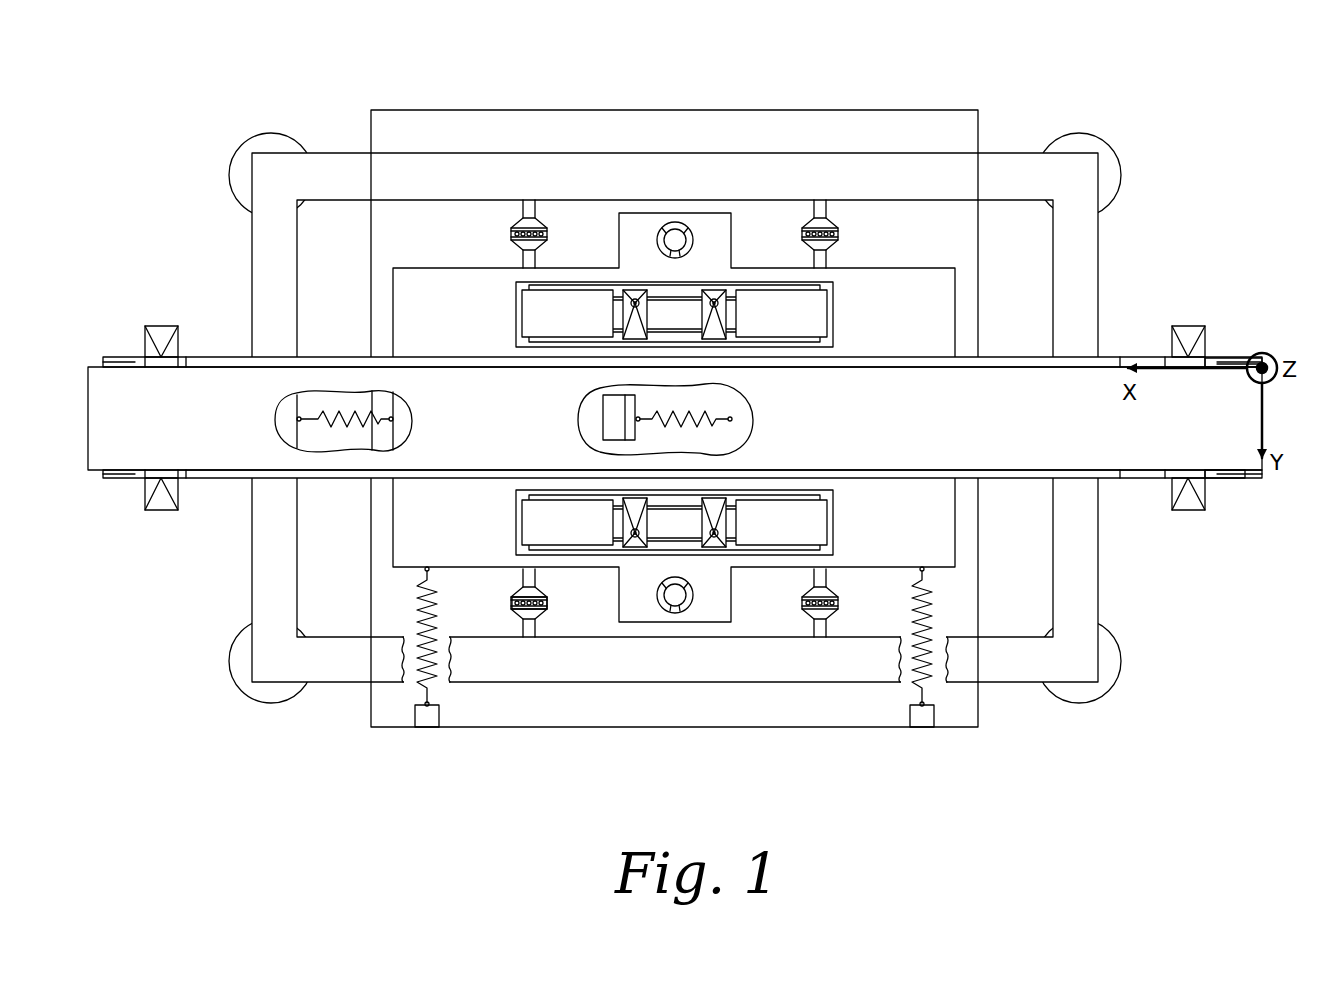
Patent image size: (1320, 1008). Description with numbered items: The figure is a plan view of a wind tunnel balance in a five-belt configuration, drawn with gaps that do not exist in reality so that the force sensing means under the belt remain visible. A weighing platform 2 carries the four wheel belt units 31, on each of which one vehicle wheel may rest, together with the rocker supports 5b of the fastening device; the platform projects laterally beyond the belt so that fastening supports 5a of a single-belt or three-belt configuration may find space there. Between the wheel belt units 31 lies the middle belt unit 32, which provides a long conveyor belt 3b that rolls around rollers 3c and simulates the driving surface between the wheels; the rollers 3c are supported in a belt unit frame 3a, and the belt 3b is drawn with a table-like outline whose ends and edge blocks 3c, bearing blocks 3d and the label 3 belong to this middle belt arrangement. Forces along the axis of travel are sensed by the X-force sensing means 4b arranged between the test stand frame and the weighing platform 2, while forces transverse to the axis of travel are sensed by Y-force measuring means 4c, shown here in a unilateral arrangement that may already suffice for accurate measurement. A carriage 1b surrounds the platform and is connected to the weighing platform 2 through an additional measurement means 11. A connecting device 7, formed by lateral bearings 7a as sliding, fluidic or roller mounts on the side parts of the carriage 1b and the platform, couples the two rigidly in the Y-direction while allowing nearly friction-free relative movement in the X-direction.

The carriage 1b is at (1003, 663).
The weighing platform 2 is at (407, 527).
The table 3 is at (1133, 344).
The middle belt unit 32 is at (675, 362).
The belt unit frame 3a is at (1118, 478).
The conveyor belt 3b is at (1005, 415).
The rollers 3c is at (103, 358).
The bearing block 3d is at (160, 512).
The X-force sensing means 4b is at (683, 420).
The Y-force measuring means 4c is at (420, 690).
The fastening supports 5a is at (674, 225).
The rocker supports 5b is at (640, 300).
The connecting device 7 is at (546, 624).
The lateral bearings 7a is at (513, 218).
The additional measurement means 11 is at (338, 390).
The wheel belt units 31 is at (573, 300).